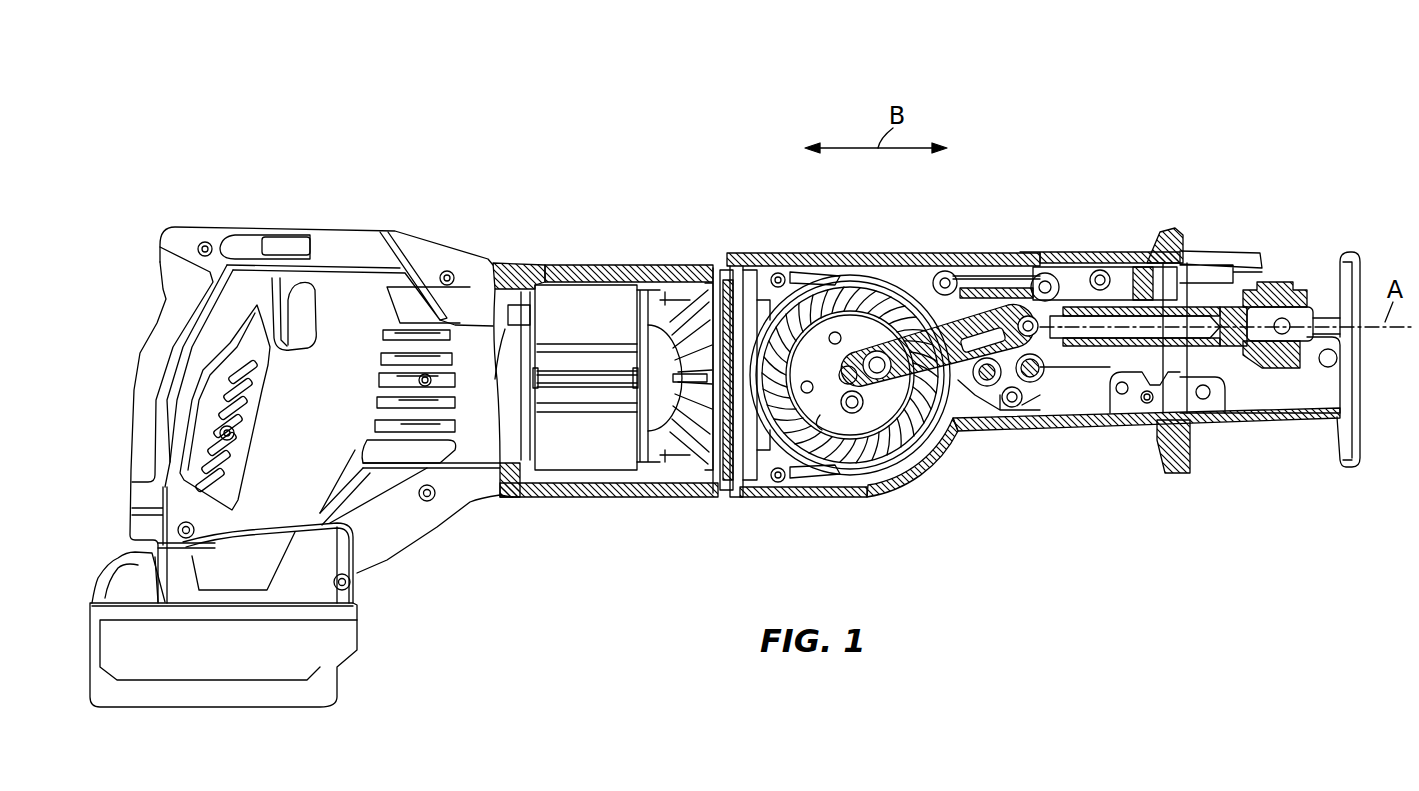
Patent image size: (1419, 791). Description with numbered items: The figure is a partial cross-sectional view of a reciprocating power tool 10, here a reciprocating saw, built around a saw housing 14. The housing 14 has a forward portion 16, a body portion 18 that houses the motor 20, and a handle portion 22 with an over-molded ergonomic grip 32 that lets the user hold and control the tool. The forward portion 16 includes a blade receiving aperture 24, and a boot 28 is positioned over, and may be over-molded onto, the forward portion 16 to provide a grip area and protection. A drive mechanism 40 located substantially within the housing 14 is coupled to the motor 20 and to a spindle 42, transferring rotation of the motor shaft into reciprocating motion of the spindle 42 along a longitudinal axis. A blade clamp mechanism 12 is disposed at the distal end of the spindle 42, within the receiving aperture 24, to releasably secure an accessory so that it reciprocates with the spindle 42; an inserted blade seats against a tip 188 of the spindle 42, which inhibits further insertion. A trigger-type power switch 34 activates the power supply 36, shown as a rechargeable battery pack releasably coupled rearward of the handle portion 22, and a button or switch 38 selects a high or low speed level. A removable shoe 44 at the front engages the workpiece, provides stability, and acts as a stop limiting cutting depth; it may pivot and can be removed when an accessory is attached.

The reciprocating power tool 10 is at (1010, 130).
The blade clamp mechanism 12 is at (1287, 283).
The saw housing 14 is at (620, 497).
The forward portion 16 is at (1080, 252).
The body portion 18 is at (598, 265).
The motor 20 is at (572, 440).
The handle portion 22 is at (414, 242).
The blade receiving aperture 24 is at (1268, 270).
The boot 28 is at (866, 497).
The ergonomic grip 32 is at (245, 462).
The trigger-type power switch 34 is at (307, 345).
The power supply 36 is at (330, 683).
The button or switch 38 is at (287, 240).
The drive mechanism 40 is at (912, 284).
The spindle 42 is at (1200, 318).
The removable shoe 44 is at (1350, 435).
The tip 188 is at (1318, 308).